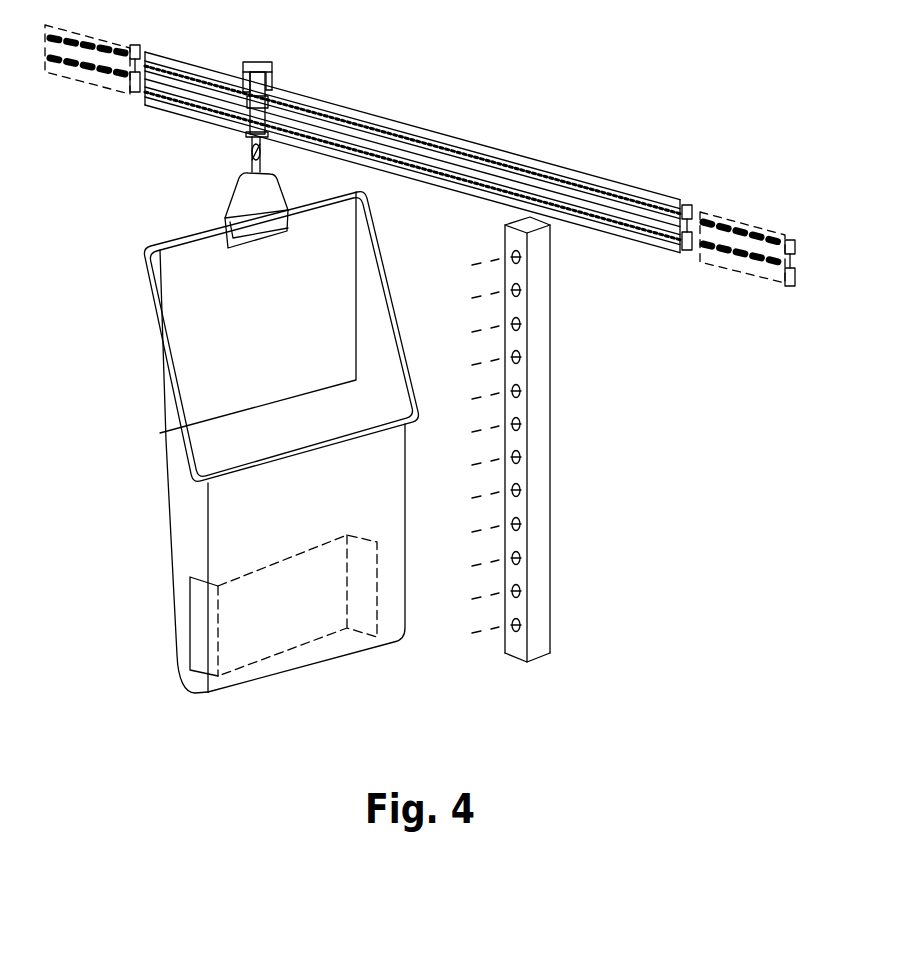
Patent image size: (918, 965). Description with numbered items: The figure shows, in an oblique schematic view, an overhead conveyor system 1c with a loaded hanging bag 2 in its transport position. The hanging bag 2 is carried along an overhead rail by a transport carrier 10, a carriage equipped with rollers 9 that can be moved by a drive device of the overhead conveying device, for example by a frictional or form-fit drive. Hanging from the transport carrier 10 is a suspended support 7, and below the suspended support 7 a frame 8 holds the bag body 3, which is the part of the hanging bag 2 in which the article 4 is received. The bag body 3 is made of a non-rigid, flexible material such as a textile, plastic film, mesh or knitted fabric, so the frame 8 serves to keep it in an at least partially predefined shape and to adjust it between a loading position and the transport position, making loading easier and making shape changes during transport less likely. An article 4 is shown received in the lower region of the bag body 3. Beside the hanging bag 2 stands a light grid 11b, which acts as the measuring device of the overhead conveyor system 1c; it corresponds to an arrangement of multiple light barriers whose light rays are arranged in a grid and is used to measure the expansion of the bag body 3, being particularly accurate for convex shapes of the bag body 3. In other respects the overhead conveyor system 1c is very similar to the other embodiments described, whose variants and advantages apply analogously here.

The overhead conveyor system 1c is at (487, 67).
The hanging bag 2 is at (128, 444).
The bag body 3 is at (180, 530).
The article 4 is at (198, 630).
The suspended support 7 is at (248, 205).
The frame 8 is at (168, 382).
The rollers 9 is at (244, 86).
The transport carrier 10 is at (256, 122).
The light grid 11b is at (538, 610).